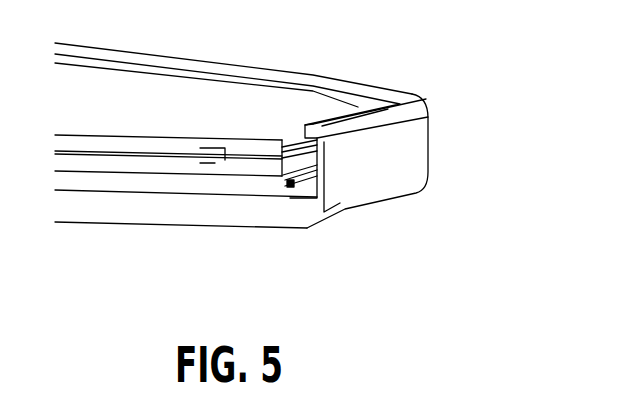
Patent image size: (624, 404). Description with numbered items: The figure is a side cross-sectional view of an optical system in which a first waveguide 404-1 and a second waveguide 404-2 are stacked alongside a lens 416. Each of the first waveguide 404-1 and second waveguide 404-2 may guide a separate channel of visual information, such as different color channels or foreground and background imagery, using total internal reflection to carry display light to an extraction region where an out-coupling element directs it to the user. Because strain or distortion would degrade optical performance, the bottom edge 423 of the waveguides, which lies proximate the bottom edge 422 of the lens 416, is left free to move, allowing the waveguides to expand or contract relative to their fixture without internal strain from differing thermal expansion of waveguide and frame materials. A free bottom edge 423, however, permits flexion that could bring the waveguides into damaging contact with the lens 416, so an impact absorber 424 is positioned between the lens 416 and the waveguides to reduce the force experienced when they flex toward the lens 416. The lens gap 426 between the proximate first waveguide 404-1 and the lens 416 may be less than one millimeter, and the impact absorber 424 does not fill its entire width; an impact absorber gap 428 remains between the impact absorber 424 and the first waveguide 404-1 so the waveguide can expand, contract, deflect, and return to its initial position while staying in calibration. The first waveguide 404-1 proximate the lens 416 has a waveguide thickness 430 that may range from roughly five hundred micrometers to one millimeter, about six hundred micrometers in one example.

The first waveguide 404-1 is at (107, 163).
The second waveguide 404-2 is at (185, 147).
The waveguide thickness 430 is at (233, 163).
The bottom edge of the waveguides 423 is at (316, 78).
The bottom edge of the lens 422 is at (414, 160).
The lens 416 is at (135, 212).
The lens gap 426 is at (240, 186).
The impact absorber gap 428 is at (285, 185).
The impact absorber 424 is at (286, 188).